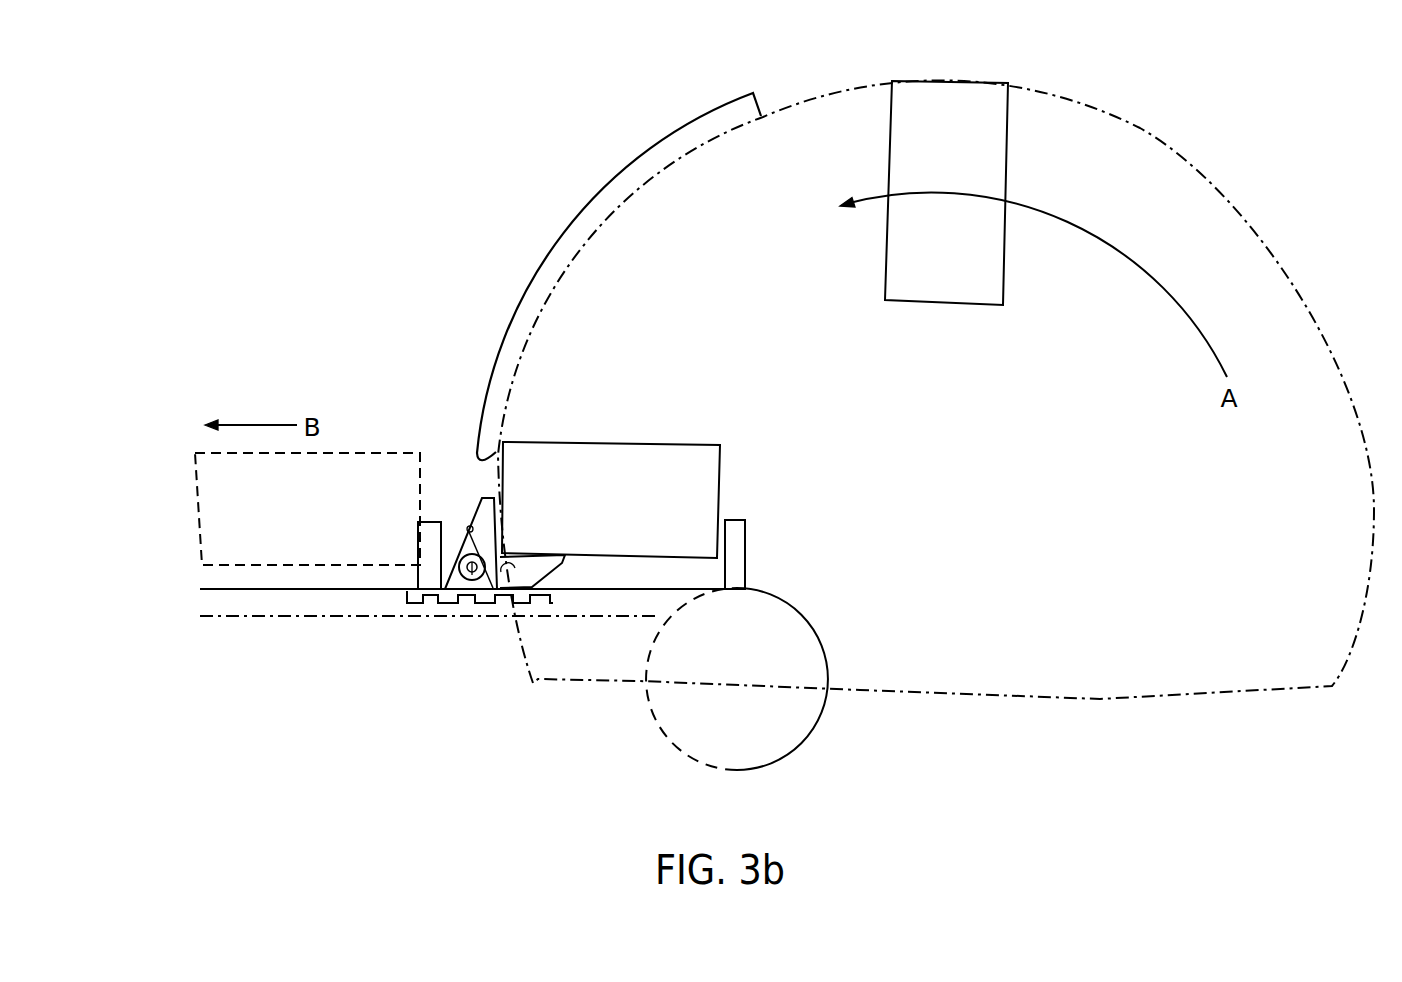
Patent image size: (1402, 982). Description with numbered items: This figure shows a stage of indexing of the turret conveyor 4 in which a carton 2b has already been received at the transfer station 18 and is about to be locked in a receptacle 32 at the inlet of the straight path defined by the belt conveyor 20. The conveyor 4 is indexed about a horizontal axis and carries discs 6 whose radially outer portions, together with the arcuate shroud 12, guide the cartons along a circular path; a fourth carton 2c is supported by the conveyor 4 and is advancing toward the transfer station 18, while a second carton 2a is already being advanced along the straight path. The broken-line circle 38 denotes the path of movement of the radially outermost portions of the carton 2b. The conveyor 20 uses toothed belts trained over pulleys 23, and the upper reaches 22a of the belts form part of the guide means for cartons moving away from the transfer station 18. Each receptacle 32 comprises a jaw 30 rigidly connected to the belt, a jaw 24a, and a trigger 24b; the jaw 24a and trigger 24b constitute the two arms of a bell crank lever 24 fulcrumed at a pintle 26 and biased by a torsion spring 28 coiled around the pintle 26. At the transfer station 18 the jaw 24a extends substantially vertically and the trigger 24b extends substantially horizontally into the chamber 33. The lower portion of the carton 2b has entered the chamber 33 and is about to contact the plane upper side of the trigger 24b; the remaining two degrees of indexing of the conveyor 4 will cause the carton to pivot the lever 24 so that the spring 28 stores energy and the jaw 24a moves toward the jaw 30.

The second transporting unit or conveyor 4 is at (1240, 75).
The broken-line circle 38 is at (1295, 262).
The arcuate shroud 12 is at (660, 162).
The fourth carton 2c is at (938, 167).
The third carton 2b is at (601, 523).
The second carton 2a is at (293, 528).
The discs 6 is at (1081, 377).
The pulleys 23 is at (733, 718).
The chamber 33 is at (623, 585).
The upper reaches of the belts 22a is at (317, 600).
The jaw 30 is at (427, 526).
The torsion spring 28 is at (467, 530).
The jaw or engaging element 24a is at (495, 517).
The trigger 24b is at (538, 572).
The pintle 26 is at (467, 592).
The bell crank lever 24 is at (483, 607).
The receptacle 32 is at (622, 640).
The transfer station 18 is at (572, 725).
The first transporting unit or conveyor 20 is at (386, 352).